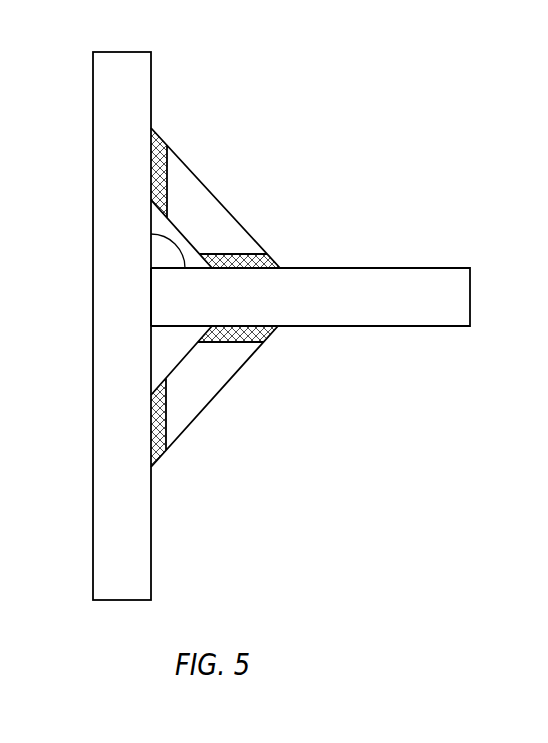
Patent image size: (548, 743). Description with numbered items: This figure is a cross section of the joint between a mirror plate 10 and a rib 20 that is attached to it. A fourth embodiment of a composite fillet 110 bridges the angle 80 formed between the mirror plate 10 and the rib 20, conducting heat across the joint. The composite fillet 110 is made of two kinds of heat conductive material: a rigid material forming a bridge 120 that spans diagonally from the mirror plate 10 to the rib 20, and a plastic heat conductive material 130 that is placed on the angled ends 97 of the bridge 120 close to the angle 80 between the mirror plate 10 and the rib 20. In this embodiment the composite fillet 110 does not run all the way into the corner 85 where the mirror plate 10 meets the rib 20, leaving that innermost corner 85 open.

The mirror plate 10 is at (132, 53).
The rib 20 is at (415, 271).
The angle 80 is at (146, 268).
The corner 85 is at (152, 322).
The angled ends 97 is at (247, 342).
The composite fillet 110 is at (268, 192).
The rigid heat conductive material 120 is at (183, 179).
The plastic heat conductive material 130 is at (272, 259).